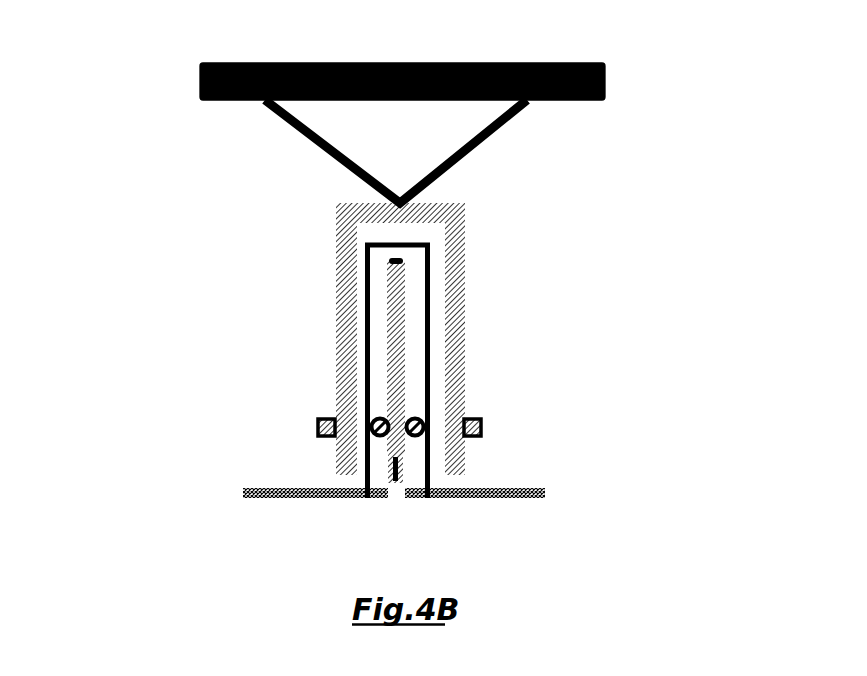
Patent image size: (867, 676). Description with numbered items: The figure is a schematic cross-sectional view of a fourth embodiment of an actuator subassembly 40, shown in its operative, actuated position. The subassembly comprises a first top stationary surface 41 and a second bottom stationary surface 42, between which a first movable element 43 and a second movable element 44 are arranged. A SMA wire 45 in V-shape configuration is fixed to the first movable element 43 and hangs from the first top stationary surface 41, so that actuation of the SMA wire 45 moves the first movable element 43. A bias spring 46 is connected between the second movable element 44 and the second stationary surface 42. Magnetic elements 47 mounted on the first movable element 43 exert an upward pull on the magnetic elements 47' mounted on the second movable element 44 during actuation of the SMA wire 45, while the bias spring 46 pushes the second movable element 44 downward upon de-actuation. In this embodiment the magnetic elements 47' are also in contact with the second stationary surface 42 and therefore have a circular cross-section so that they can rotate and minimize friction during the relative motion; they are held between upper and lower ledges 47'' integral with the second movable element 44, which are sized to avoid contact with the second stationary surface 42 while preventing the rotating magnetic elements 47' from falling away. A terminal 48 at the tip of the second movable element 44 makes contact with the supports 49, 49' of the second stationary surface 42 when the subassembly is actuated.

The actuator subassembly 40 is at (644, 164).
The first top stationary surface 41 is at (225, 101).
The second bottom stationary surface 42 is at (428, 283).
The first movable element 43 is at (336, 300).
The second movable element 44 is at (397, 372).
The SMA wire 45 is at (333, 160).
The bias spring 46 is at (399, 260).
The magnetic elements 47 is at (348, 393).
The magnetic elements 47' is at (306, 429).
The upper and lower ledges 47'' is at (504, 426).
The terminal 48 is at (395, 483).
The support 49 is at (272, 509).
The support 49' is at (533, 529).